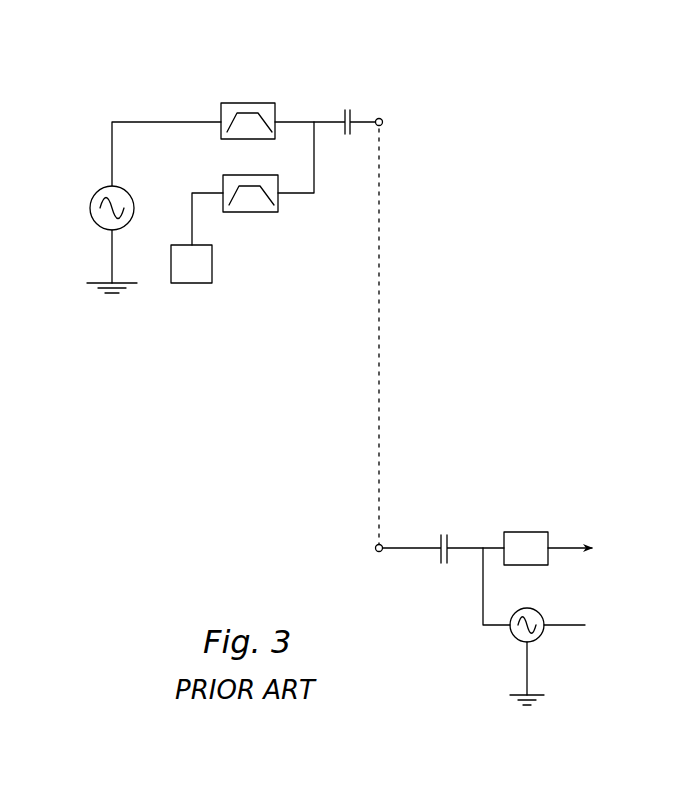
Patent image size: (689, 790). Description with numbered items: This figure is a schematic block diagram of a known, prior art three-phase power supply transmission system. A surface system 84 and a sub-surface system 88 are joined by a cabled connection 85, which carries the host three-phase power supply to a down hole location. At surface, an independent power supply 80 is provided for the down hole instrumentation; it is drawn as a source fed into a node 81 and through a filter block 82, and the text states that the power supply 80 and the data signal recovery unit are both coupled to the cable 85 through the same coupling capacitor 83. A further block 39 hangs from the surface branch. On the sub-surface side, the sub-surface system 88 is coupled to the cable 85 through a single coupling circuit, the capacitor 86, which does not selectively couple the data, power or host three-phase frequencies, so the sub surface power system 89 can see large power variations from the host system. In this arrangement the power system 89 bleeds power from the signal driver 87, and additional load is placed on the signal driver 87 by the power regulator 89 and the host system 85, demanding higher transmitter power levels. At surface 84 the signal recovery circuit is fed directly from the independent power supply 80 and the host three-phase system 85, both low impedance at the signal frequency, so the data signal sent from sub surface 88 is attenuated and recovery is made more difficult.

The independent power supply 80 is at (91, 223).
The node 81 is at (118, 114).
The filter 82 is at (279, 100).
The coupling capacitor 83 is at (360, 113).
The surface system 84 is at (438, 336).
The cabled connection 85 is at (384, 320).
The coupling capacitor 86 is at (457, 537).
The signal driver 87 is at (502, 636).
The sub-surface system 88 is at (601, 630).
The sub surface power system 89 is at (548, 530).
The block 39 is at (202, 294).